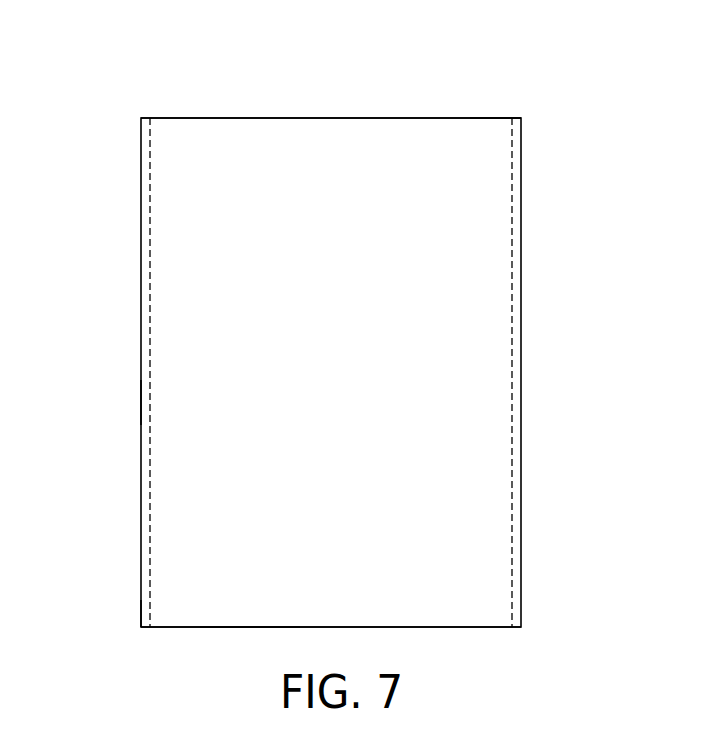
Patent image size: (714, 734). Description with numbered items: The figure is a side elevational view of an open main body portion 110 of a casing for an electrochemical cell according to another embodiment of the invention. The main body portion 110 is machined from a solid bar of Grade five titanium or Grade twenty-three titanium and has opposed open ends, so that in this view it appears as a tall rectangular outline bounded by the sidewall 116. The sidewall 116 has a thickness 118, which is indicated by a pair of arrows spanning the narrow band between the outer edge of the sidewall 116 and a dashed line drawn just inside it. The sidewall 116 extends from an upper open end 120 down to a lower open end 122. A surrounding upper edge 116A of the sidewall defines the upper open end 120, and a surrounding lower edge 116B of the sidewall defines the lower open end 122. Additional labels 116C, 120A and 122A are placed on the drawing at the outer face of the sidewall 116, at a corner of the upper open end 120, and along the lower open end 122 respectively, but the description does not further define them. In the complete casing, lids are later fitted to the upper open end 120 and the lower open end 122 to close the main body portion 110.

The main body portion 110 is at (495, 234).
The sidewall 116 is at (522, 312).
The surrounding upper edge 116A is at (142, 627).
The surrounding lower edge 116B is at (141, 118).
The outer edge of side seal 116C is at (141, 403).
The thickness 118 is at (482, 445).
The upper open end 120 is at (455, 82).
The top edge corner 120A is at (490, 118).
The lower open end 122 is at (457, 637).
The bottom edge portion 122A is at (250, 627).